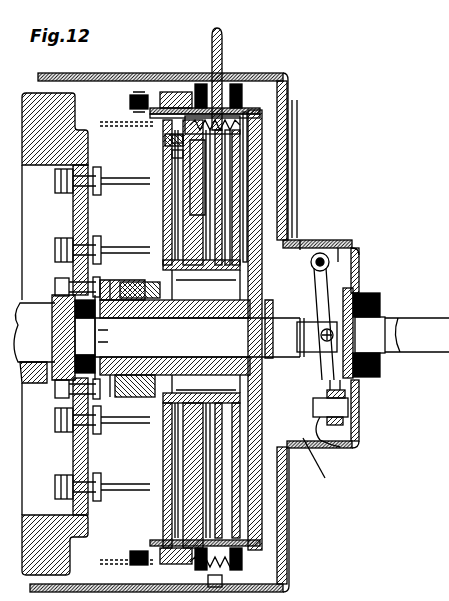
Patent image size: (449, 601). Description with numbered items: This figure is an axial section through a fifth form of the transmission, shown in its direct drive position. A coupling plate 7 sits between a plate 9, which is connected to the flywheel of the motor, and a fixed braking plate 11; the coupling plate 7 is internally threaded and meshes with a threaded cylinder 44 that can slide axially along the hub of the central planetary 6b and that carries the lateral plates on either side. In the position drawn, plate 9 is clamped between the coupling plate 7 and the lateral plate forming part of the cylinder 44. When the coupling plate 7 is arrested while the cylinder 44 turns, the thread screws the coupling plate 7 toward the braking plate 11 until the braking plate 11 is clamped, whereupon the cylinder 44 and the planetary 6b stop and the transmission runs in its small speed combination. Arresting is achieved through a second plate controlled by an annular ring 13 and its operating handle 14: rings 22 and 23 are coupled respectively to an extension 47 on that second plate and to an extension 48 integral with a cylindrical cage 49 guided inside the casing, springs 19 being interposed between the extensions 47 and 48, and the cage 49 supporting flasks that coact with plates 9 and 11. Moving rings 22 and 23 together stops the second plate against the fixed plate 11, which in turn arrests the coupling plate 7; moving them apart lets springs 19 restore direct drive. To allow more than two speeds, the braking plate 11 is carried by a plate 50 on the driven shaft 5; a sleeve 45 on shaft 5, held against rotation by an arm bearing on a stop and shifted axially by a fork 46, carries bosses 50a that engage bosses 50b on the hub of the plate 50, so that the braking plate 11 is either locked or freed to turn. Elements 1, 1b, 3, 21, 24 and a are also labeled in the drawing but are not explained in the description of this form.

The shaft 1 is at (35, 305).
The bolt 1b is at (60, 190).
The bolt 3 is at (106, 230).
The driven shaft 5 is at (358, 388).
The central planetary 6b is at (135, 290).
The coupling plate 7 is at (300, 210).
The plate 9 is at (160, 152).
The braking plate 11 is at (240, 170).
The annular ring 13 is at (228, 72).
The operating handle 14 is at (222, 40).
The springs 19 is at (262, 110).
The nut 21 is at (190, 84).
The ring 22 is at (172, 90).
The ring 23 is at (292, 100).
The bolt 24 is at (150, 95).
The cylinder 44 is at (286, 243).
The sleeve 45 is at (326, 310).
The fork 46 is at (355, 296).
The extension 47 is at (150, 127).
The extension 48 is at (240, 124).
The cylindrical cage 49 is at (240, 140).
The plate 50 is at (330, 478).
The bosses 50a is at (325, 257).
The bosses 50b is at (312, 265).
The axis a is at (5, 241).